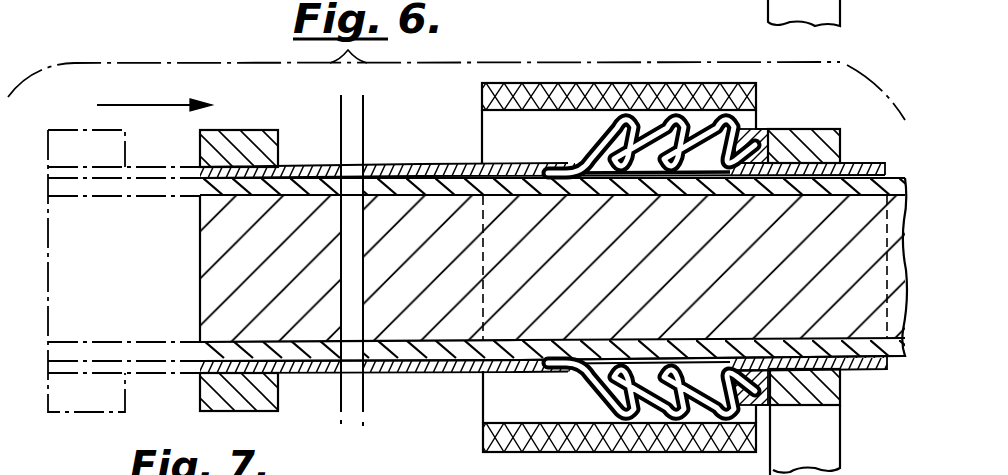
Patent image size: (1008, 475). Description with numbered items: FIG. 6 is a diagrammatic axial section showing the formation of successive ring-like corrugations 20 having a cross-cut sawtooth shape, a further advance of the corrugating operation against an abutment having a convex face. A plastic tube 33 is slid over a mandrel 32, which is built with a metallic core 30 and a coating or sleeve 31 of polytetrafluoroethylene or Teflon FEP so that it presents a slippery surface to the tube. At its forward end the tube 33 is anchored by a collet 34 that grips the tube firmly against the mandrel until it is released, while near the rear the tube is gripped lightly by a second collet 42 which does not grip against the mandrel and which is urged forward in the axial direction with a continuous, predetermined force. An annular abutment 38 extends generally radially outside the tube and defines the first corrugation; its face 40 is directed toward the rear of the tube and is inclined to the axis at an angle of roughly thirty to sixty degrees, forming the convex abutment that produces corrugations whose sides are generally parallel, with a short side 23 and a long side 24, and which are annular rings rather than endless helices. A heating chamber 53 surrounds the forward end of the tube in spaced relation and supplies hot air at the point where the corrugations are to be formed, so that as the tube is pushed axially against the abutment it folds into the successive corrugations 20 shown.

The corrugations 20 is at (604, 394).
The short side 23 is at (652, 112).
The long side 24 is at (608, 132).
The metallic core 30 is at (457, 322).
The coating or sleeve 31 is at (425, 183).
The mandrel 32 is at (217, 267).
The plastic tube 33 is at (420, 142).
The collet 34 is at (827, 120).
The annular abutment 38 is at (793, 400).
The abutment face 40 is at (776, 138).
The collet 42 is at (227, 132).
The heating chamber 53 is at (692, 2).